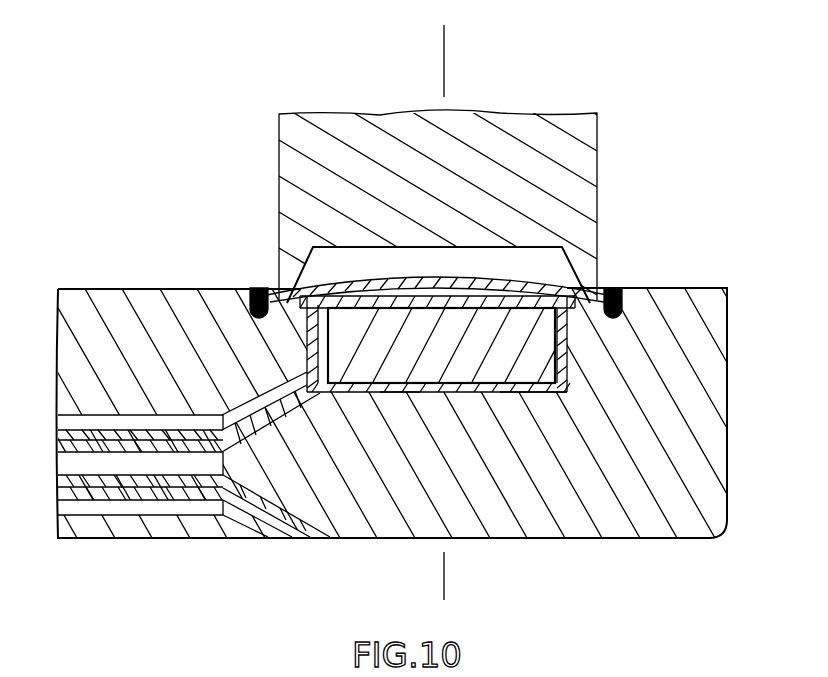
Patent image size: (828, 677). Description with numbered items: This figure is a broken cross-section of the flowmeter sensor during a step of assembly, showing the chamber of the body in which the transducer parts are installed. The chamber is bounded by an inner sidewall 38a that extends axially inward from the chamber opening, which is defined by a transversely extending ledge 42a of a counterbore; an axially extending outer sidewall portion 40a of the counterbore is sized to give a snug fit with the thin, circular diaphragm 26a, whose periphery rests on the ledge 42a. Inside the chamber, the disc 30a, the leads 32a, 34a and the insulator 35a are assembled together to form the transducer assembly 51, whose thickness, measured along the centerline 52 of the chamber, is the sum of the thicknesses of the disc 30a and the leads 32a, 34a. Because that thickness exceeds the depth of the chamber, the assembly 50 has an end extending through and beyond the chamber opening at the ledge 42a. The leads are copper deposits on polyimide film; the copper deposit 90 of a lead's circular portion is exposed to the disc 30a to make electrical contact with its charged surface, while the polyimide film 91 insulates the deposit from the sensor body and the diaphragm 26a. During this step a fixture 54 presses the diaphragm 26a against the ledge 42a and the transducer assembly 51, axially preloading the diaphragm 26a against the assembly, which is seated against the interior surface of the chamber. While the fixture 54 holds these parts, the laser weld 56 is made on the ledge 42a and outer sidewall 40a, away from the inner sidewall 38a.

The centerline 52 is at (444, 50).
The fixture 54 is at (598, 142).
The polyimide film 91 is at (400, 297).
The lead 32a is at (460, 300).
The laser weld 56 is at (257, 292).
The diaphragm 26a is at (540, 300).
The outer sidewall portion 40a is at (252, 292).
The ledge 42a is at (615, 290).
The inner sidewall 38a is at (567, 328).
The copper deposit 90 is at (372, 312).
The assembly 50 is at (572, 353).
The insulator 35a is at (565, 373).
The disc 30a is at (533, 362).
The transducer assembly 51 is at (401, 391).
The lead 34a is at (512, 397).